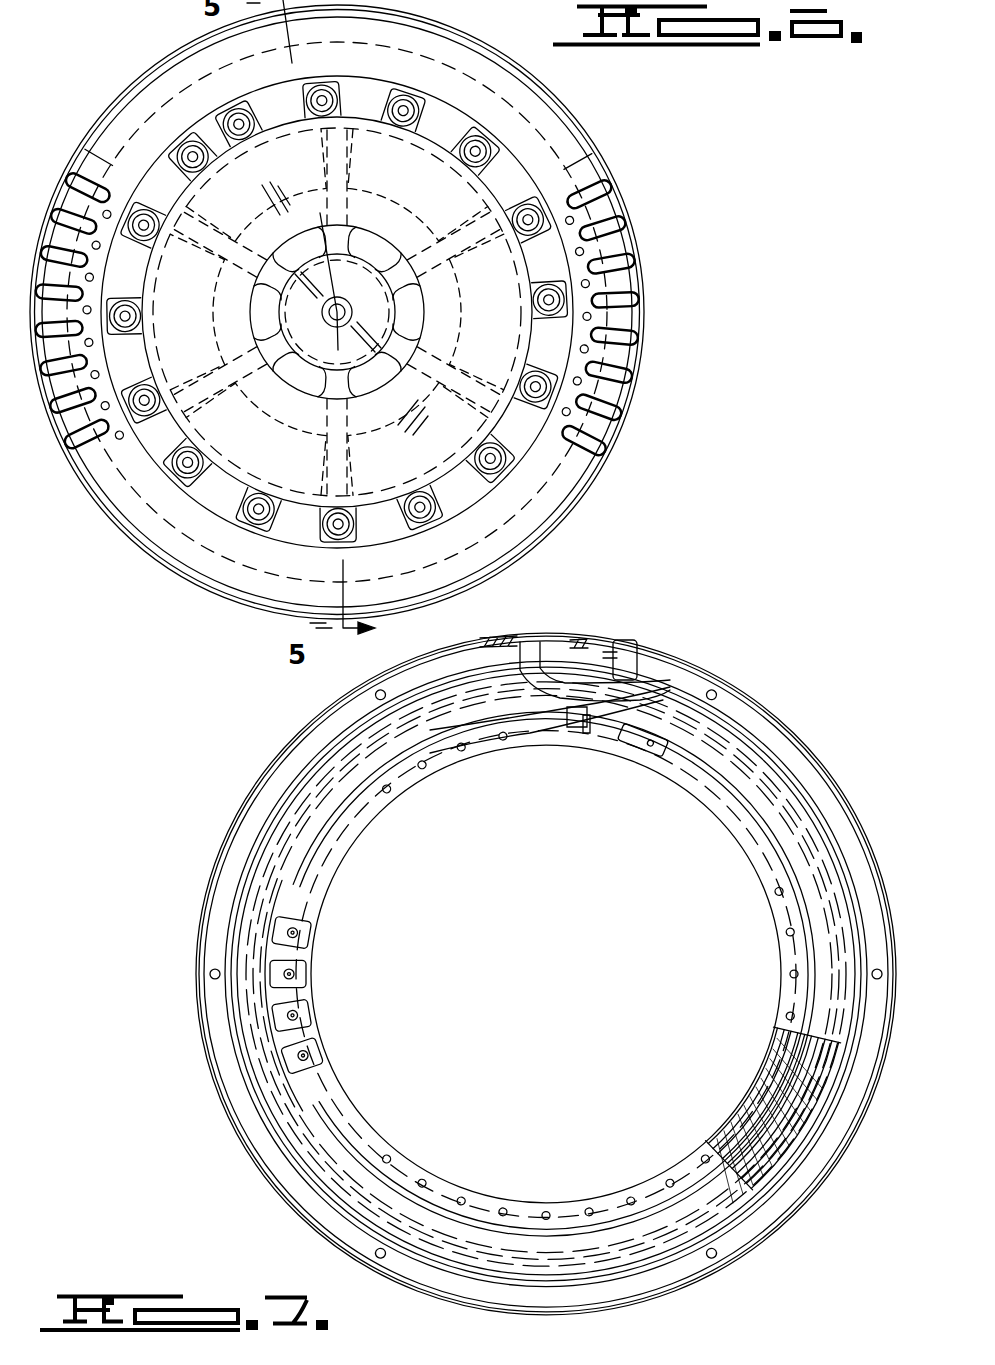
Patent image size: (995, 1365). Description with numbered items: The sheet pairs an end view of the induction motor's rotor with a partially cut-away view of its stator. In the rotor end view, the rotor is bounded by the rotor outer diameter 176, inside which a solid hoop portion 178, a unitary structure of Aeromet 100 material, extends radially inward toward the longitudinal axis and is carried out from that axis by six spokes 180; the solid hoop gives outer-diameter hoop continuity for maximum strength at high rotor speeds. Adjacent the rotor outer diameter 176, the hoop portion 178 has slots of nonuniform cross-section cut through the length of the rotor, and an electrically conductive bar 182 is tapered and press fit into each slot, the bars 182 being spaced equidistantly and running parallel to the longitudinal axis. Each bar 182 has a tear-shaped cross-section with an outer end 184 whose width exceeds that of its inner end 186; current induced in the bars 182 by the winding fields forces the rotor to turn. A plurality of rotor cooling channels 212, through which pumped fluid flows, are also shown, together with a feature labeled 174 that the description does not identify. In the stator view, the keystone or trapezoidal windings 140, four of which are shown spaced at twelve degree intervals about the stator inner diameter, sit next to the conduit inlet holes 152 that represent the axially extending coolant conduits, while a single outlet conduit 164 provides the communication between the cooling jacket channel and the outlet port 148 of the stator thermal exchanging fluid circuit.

In FIG. 6, the stator assembly 100 is at (456, 397).
In FIG. 7, the windings 140 is at (308, 1017).
In FIG. 7, the outlet port 148 is at (528, 642).
In FIG. 7, the conduit inlet holes 152 is at (498, 735).
In FIG. 7, the outlet conduit 164 is at (637, 655).
In FIG. 6, the inner ring 174 is at (616, 440).
In FIG. 6, the rotor outer diameter 176 is at (585, 138).
In FIG. 6, the hoop portion 178 is at (160, 555).
In FIG. 6, the spokes 180 is at (345, 185).
In FIG. 6, the electrically conductive bar 182 is at (80, 197).
In FIG. 6, the outer end 184 is at (635, 262).
In FIG. 6, the inner end 186 is at (318, 92).
In FIG. 6, the rotor cooling channels 212 is at (583, 353).